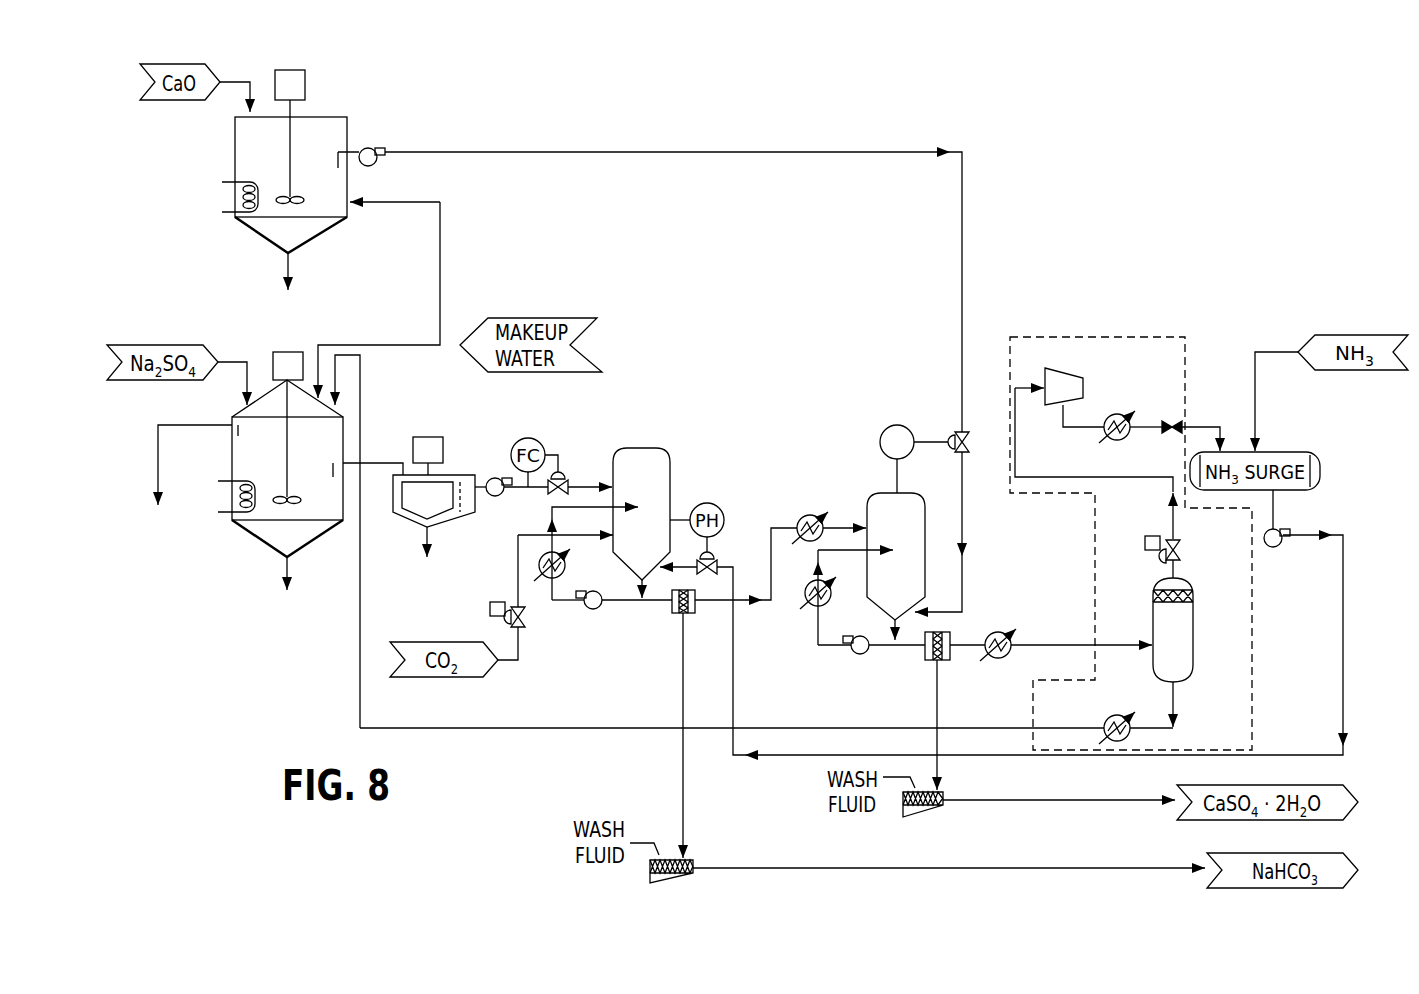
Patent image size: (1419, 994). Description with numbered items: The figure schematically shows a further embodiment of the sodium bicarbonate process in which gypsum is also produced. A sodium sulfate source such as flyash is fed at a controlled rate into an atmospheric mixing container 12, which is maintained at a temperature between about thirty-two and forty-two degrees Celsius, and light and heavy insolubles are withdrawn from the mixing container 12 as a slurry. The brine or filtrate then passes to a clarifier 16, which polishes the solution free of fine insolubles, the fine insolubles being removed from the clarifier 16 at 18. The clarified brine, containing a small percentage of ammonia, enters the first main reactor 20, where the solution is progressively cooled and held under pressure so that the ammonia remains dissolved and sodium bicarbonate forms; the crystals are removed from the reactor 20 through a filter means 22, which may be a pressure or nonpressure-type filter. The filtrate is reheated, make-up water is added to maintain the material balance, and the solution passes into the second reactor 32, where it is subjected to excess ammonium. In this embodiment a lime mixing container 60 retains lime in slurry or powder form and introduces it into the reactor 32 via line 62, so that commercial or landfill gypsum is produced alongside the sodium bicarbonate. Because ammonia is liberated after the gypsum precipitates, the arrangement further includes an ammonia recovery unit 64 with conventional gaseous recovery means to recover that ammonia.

The lime mixing container 60 is at (257, 237).
The atmospheric mixing container 12 is at (258, 538).
The clarifier 16 is at (450, 478).
The fine insolubles removal point 18 is at (443, 531).
The first main reactor 20 is at (643, 448).
The filter means 22 is at (670, 612).
The reactor 32 is at (879, 493).
The line 62 is at (962, 208).
The ammonia recovery unit 64 is at (1108, 337).